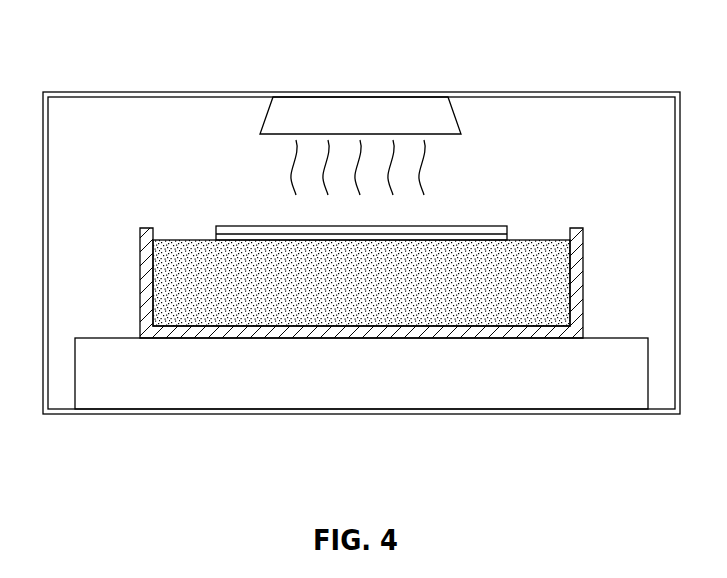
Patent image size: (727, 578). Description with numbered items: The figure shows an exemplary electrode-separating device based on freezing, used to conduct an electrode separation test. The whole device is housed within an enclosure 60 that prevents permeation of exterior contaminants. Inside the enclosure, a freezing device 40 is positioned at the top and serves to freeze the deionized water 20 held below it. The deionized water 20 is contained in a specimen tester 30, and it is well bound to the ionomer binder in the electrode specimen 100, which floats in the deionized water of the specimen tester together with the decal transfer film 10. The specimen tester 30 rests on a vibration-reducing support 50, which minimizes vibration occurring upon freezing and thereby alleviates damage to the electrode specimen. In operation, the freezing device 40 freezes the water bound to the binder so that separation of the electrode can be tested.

The enclosure 60 is at (155, 93).
The freezing device 40 is at (356, 110).
The decal transfer film 10 is at (478, 226).
The electrode specimen 100 is at (508, 240).
The deionized water 20 is at (512, 310).
The specimen tester 30 is at (234, 330).
The vibration-reducing support 50 is at (359, 385).